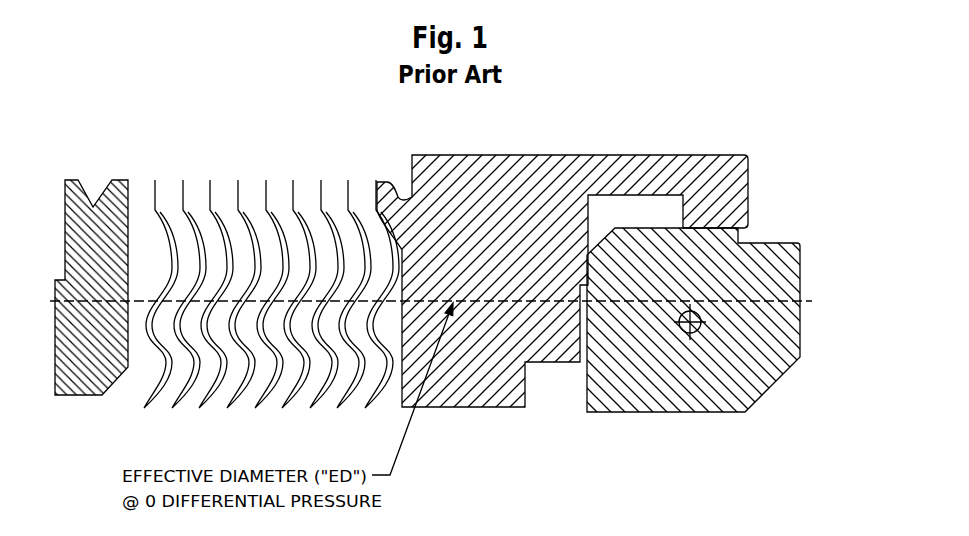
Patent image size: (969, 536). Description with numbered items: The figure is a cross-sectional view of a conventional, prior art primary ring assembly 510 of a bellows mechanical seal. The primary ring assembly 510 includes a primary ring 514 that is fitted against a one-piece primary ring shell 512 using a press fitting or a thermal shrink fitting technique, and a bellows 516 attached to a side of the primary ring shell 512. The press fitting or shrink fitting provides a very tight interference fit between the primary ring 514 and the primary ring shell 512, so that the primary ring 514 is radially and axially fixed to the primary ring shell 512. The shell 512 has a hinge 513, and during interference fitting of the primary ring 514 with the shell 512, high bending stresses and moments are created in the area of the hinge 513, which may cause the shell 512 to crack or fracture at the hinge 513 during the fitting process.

The primary ring assembly 510 is at (506, 146).
The primary ring shell 512 is at (732, 157).
The hinge 513 is at (603, 157).
The primary ring 514 is at (799, 255).
The bellows 516 is at (269, 183).